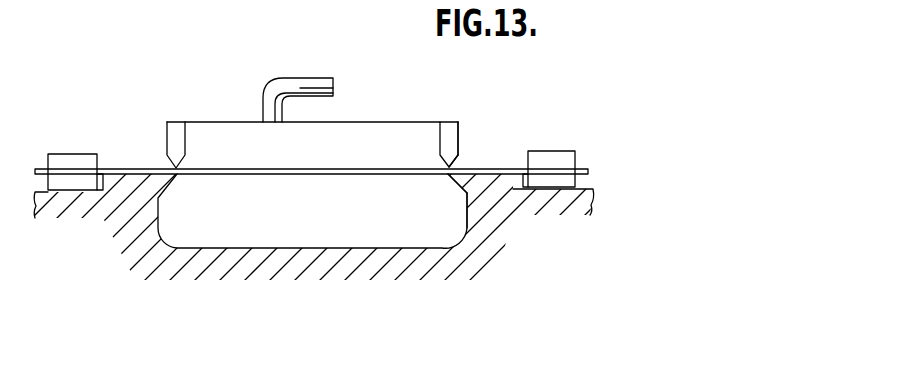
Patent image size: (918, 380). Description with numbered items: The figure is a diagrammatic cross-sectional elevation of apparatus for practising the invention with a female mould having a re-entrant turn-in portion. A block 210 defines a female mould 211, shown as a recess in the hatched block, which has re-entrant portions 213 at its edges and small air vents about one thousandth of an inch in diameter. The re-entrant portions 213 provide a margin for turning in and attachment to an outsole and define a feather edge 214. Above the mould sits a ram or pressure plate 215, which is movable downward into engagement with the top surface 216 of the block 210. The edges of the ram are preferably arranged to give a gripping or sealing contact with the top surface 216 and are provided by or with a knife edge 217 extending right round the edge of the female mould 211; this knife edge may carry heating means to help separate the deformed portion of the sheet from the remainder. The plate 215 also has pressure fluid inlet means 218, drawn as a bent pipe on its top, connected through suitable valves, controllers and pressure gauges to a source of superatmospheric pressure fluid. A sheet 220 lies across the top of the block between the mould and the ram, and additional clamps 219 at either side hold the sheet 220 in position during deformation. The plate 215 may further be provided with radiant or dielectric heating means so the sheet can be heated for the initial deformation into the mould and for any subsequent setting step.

The block 210 is at (151, 290).
The female mould 211 is at (293, 235).
The re-entrant portions 213 is at (468, 190).
The feather edge 214 is at (465, 193).
The ram or pressure plate 215 is at (380, 122).
The top surface 216 is at (474, 167).
The knife edge 217 is at (462, 135).
The pressure fluid inlet means 218 is at (313, 85).
The clamps 219 is at (84, 160).
The sheet 220 is at (130, 168).